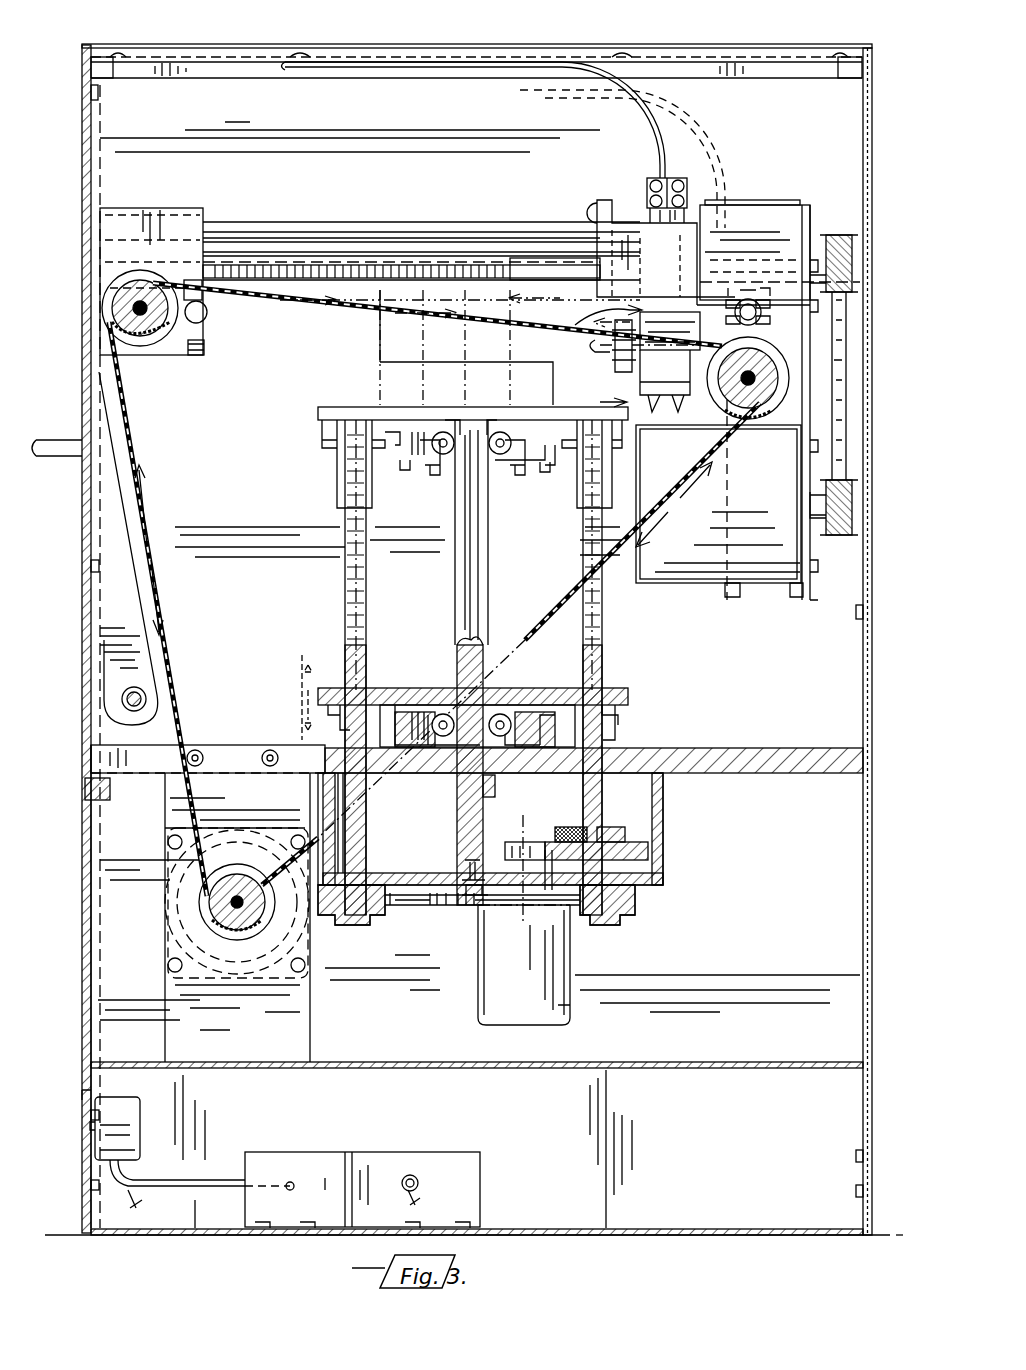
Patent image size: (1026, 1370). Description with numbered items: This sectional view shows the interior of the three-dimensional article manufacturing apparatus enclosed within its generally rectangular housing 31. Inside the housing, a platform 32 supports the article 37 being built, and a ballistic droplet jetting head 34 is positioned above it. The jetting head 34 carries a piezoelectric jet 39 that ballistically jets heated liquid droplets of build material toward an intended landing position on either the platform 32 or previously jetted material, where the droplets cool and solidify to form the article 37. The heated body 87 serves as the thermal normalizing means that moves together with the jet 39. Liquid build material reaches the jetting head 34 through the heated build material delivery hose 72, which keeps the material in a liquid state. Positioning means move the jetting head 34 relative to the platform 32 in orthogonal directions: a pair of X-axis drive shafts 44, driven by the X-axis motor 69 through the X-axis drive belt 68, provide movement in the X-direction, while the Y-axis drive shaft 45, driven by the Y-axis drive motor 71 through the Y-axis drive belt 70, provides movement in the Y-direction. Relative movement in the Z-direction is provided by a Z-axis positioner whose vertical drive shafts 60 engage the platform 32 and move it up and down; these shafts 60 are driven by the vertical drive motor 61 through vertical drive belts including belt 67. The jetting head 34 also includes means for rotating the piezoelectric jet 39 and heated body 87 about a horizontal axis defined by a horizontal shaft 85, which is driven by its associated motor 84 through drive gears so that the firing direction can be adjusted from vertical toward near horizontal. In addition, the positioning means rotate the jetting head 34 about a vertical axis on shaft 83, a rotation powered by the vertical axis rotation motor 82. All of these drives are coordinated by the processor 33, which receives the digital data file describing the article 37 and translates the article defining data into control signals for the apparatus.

The housing 31 is at (655, 52).
The platform 32 is at (340, 407).
The processor 33 is at (448, 1152).
The ballistic jetting head 34 is at (437, 314).
The article 37 is at (380, 352).
The piezoelectric jet 39 is at (728, 378).
The X-axis drive shafts 44 is at (138, 355).
The Y-axis drive shaft 45 is at (372, 265).
The vertical drive shafts 60 is at (372, 850).
The vertical drive motor 61 is at (562, 958).
The vertical drive belt 67 is at (503, 836).
The X-axis drive belt 68 is at (175, 612).
The X-axis motor 69 is at (200, 972).
The Y-axis drive belt 70 is at (830, 405).
The Y-axis drive motor 71 is at (686, 578).
The build material delivery hose 72 is at (655, 120).
The vertical axis rotation motor 82 is at (645, 218).
The shaft 83 is at (723, 252).
The motor 84 is at (600, 340).
The horizontal shaft 85 is at (640, 372).
The heated body 87 is at (642, 381).